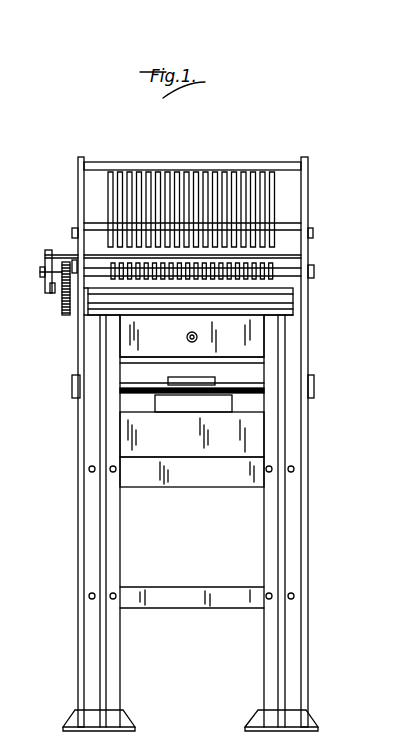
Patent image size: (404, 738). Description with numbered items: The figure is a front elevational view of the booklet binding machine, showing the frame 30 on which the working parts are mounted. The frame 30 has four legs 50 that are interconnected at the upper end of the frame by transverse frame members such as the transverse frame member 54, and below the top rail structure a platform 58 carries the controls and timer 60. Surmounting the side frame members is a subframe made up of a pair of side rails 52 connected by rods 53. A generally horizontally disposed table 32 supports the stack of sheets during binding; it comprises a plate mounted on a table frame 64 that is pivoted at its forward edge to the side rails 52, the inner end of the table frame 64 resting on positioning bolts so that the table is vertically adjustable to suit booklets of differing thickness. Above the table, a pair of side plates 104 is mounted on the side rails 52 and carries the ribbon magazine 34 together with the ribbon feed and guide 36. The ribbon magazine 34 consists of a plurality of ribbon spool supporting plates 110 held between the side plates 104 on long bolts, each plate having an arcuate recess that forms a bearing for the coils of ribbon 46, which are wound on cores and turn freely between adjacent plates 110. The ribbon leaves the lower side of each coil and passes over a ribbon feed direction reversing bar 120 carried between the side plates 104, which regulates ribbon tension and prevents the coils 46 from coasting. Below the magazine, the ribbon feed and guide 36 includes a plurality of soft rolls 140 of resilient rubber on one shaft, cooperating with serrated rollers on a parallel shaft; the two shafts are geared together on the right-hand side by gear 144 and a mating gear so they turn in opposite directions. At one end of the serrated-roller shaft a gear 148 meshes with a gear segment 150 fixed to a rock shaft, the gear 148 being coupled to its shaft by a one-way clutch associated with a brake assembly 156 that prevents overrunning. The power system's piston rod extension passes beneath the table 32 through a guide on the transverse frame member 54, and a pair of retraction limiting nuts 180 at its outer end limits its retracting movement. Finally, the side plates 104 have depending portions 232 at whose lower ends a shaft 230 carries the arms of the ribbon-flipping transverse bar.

The frame 30 is at (183, 429).
The table 32 is at (227, 265).
The ribbon magazine 34 is at (210, 191).
The ribbon feed and guide 36 is at (227, 242).
The coils of ribbon 46 is at (260, 170).
The legs 50 is at (270, 647).
The side rails 52 is at (296, 312).
The rods 53 is at (147, 314).
The transverse frame member 54 is at (250, 332).
The platform 58 is at (244, 458).
The controls and timer 60 is at (244, 422).
The table frame 64 is at (284, 297).
The side plates 104 is at (303, 170).
The ribbon spool supporting plates 110 is at (203, 186).
The ribbon feed direction reversing bar 120 is at (142, 165).
The soft rolls 140 is at (255, 262).
The gear 144 is at (316, 272).
The gear 148 is at (66, 262).
The gear segment 150 is at (85, 311).
The brake assembly 156 is at (50, 283).
The retraction limiting nuts 180 is at (190, 343).
The shaft 230 is at (247, 384).
The depending portions 232 is at (307, 368).